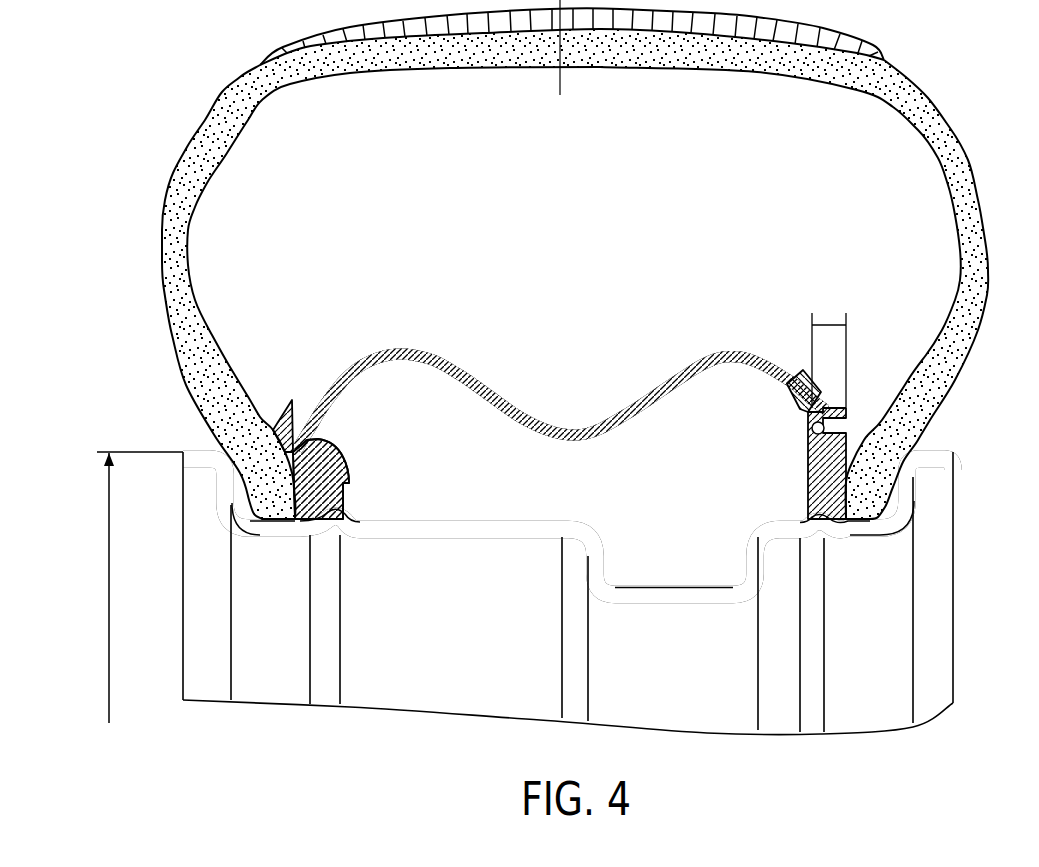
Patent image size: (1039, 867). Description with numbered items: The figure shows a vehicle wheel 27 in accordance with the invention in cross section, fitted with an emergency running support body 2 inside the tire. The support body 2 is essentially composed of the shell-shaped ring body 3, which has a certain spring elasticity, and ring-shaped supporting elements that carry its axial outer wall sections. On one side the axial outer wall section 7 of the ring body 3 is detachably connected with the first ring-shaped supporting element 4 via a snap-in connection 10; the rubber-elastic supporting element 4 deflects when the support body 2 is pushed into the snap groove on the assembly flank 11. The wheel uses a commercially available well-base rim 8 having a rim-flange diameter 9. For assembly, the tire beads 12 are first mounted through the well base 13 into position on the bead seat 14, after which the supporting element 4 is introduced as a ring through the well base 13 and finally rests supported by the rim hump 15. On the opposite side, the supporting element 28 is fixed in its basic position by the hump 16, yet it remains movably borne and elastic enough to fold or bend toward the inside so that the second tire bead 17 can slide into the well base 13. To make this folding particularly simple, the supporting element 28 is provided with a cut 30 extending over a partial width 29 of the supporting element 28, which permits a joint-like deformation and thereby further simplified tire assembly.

The emergency running support body 2 is at (670, 320).
The shell-shaped ring body 3 is at (720, 357).
The first ring-shaped supporting element 4 is at (336, 497).
The axial outer wall section 7 is at (306, 381).
The well-base rim 8 is at (703, 677).
The rim-flange diameter 9 is at (107, 679).
The snap-in connection 10 is at (298, 467).
The assembly flank 11 is at (366, 450).
The tire bead 12 is at (266, 535).
The well base 13 is at (677, 556).
The bead seat 14 is at (292, 550).
The rim hump 15 is at (330, 532).
The hump 16 is at (808, 522).
The second tire bead 17 is at (865, 542).
The vehicle wheel 27 is at (960, 79).
The supporting element 28 is at (815, 457).
The partial width 29 is at (836, 324).
The cut 30 is at (858, 425).